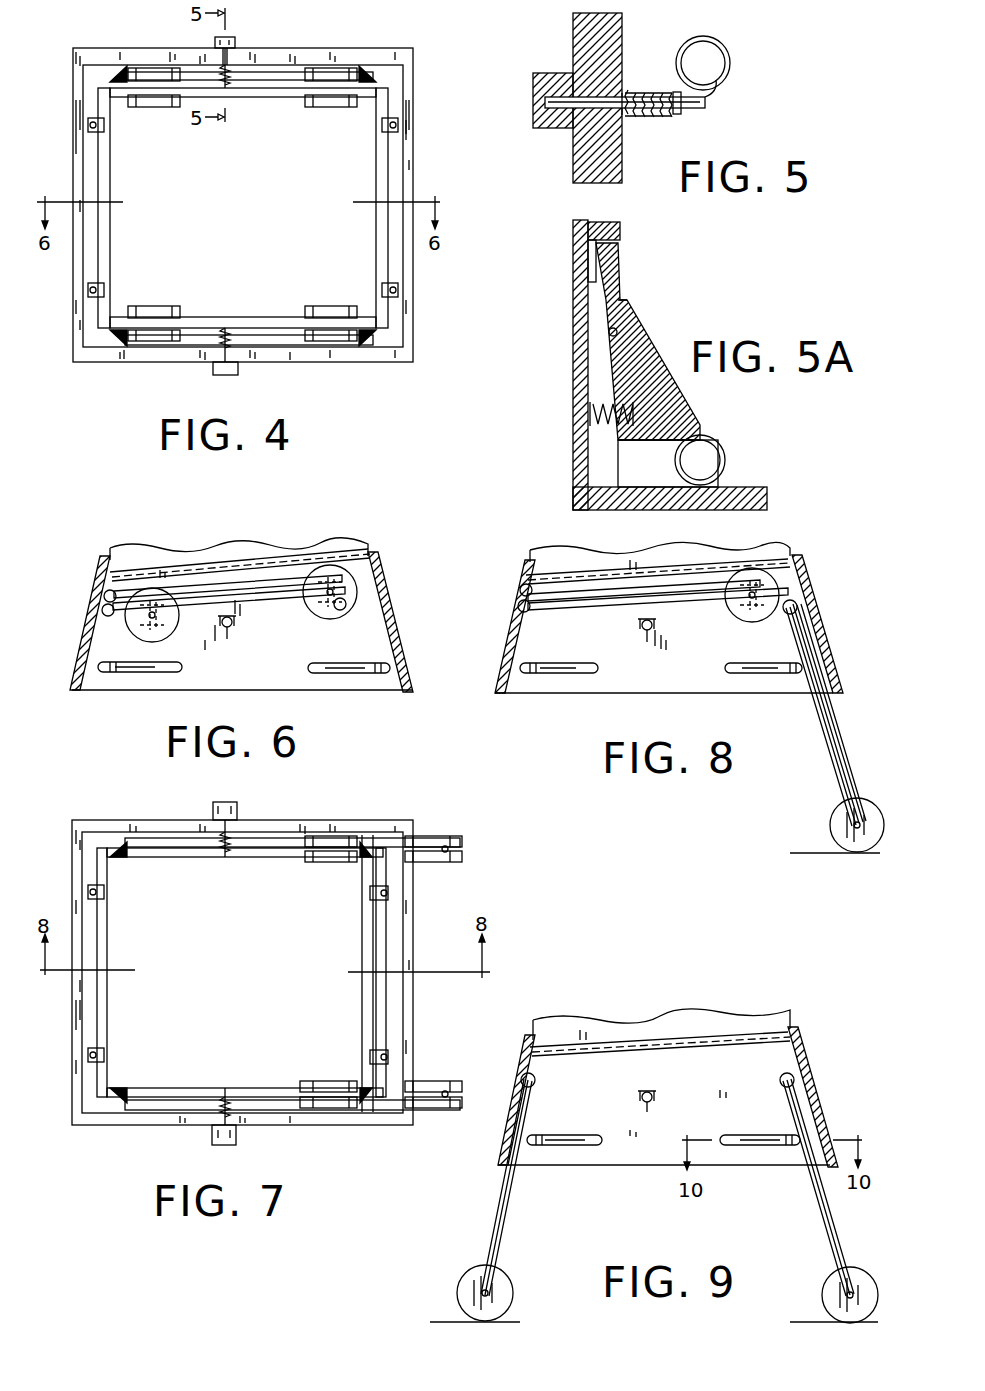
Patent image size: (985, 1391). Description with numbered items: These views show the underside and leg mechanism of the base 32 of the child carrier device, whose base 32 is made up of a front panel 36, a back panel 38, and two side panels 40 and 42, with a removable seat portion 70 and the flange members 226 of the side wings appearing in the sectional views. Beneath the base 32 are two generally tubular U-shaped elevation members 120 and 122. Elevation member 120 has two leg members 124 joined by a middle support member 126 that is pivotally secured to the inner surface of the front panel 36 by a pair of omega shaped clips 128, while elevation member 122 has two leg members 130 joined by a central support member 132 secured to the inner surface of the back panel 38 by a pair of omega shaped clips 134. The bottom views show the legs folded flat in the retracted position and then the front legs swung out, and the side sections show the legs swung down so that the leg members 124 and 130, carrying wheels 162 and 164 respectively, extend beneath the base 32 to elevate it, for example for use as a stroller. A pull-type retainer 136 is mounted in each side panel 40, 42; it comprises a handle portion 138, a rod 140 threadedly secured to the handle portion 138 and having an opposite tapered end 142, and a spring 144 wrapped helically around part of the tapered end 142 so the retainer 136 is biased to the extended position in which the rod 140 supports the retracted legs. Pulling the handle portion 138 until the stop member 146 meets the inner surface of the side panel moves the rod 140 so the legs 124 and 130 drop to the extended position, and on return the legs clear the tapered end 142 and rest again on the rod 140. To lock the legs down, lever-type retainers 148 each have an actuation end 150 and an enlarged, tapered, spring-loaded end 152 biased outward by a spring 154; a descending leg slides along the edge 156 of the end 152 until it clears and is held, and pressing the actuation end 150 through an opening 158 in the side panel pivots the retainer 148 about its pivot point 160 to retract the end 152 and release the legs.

In FIG. 4, the base 32 is at (421, 40).
In FIG. 6, the base 32 is at (226, 596).
In FIG. 8, the base 32 is at (651, 604).
In FIG. 7, the base 32 is at (68, 810).
In FIG. 9, the base 32 is at (645, 1083).
In FIG. 4, the front panel 36 is at (405, 160).
In FIG. 6, the front panel 36 is at (380, 578).
In FIG. 8, the front panel 36 is at (804, 584).
In FIG. 7, the front panel 36 is at (406, 973).
In FIG. 9, the front panel 36 is at (804, 1090).
In FIG. 4, the back panel 38 is at (78, 156).
In FIG. 6, the back panel 38 is at (84, 622).
In FIG. 8, the back panel 38 is at (508, 628).
In FIG. 7, the back panel 38 is at (76, 1012).
In FIG. 9, the back panel 38 is at (500, 1140).
In FIG. 4, the side panel 40 is at (282, 352).
In FIG. 7, the side panel 40 is at (294, 1126).
In FIG. 4, the side panel 42 is at (295, 58).
In FIG. 5, the side panel 42 is at (574, 22).
In FIG. 5A, the side panel 42 is at (574, 346).
In FIG. 6, the side panel 42 is at (296, 669).
In FIG. 8, the side panel 42 is at (586, 636).
In FIG. 7, the side panel 42 is at (300, 826).
In FIG. 9, the side panel 42 is at (616, 1107).
In FIG. 6, the seat portion 70 is at (290, 556).
In FIG. 8, the seat portion 70 is at (676, 570).
In FIG. 9, the seat portion 70 is at (628, 1040).
In FIG. 4, the elevation member 120 is at (400, 179).
In FIG. 7, the elevation member 120 is at (283, 972).
In FIG. 4, the elevation member 122 is at (94, 254).
In FIG. 7, the elevation member 122 is at (120, 936).
In FIG. 4, the leg member 124 is at (264, 84).
In FIG. 5, the leg member 124 is at (728, 52).
In FIG. 5A, the leg member 124 is at (726, 460).
In FIG. 6, the leg member 124 is at (266, 612).
In FIG. 8, the leg member 124 is at (822, 745).
In FIG. 7, the leg member 124 is at (395, 838).
In FIG. 9, the leg member 124 is at (824, 1220).
In FIG. 4, the middle support member 126 is at (390, 250).
In FIG. 7, the middle support member 126 is at (372, 990).
In FIG. 4, the omega shaped clip 128 is at (382, 130).
In FIG. 6, the omega shaped clip 128 is at (340, 610).
In FIG. 8, the omega shaped clip 128 is at (786, 614).
In FIG. 7, the omega shaped clip 128 is at (370, 894).
In FIG. 9, the omega shaped clip 128 is at (780, 1082).
In FIG. 6, the leg member 130 is at (250, 582).
In FIG. 8, the leg member 130 is at (698, 600).
In FIG. 7, the leg member 130 is at (203, 857).
In FIG. 9, the leg member 130 is at (500, 1206).
In FIG. 7, the central support member 132 is at (110, 992).
In FIG. 4, the omega shaped clip 134 is at (104, 124).
In FIG. 6, the omega shaped clip 134 is at (116, 618).
In FIG. 8, the omega shaped clip 134 is at (530, 614).
In FIG. 7, the omega shaped clip 134 is at (106, 893).
In FIG. 9, the omega shaped clip 134 is at (535, 1080).
In FIG. 4, the pull-type retainer 136 is at (218, 198).
In FIG. 5, the pull-type retainer 136 is at (634, 99).
In FIG. 6, the pull-type retainer 136 is at (227, 640).
In FIG. 8, the pull-type retainer 136 is at (648, 632).
In FIG. 7, the pull-type retainer 136 is at (211, 968).
In FIG. 9, the pull-type retainer 136 is at (648, 1090).
In FIG. 4, the handle portion 138 is at (236, 48).
In FIG. 5, the handle portion 138 is at (548, 74).
In FIG. 7, the handle portion 138 is at (220, 802).
In FIG. 4, the rod 140 is at (214, 62).
In FIG. 5, the rod 140 is at (565, 112).
In FIG. 7, the rod 140 is at (226, 1088).
In FIG. 5, the tapered end 142 is at (707, 104).
In FIG. 5, the spring 144 is at (660, 116).
In FIG. 5, the stop member 146 is at (682, 114).
In FIG. 5A, the lever-type retainer 148 is at (621, 345).
In FIG. 5A, the actuation end 150 is at (610, 246).
In FIG. 6, the actuation end 150 is at (170, 674).
In FIG. 8, the actuation end 150 is at (592, 674).
In FIG. 9, the actuation end 150 is at (596, 1146).
In FIG. 4, the spring-loaded end 152 is at (380, 76).
In FIG. 5A, the spring-loaded end 152 is at (665, 410).
In FIG. 6, the spring-loaded end 152 is at (114, 674).
In FIG. 8, the spring-loaded end 152 is at (532, 674).
In FIG. 7, the spring-loaded end 152 is at (104, 846).
In FIG. 9, the spring-loaded end 152 is at (538, 1146).
In FIG. 5A, the spring 154 is at (598, 424).
In FIG. 5A, the edge 156 is at (636, 408).
In FIG. 5A, the opening 158 is at (580, 258).
In FIG. 5A, the pivot point 160 is at (618, 333).
In FIG. 4, the wheel 162 is at (154, 70).
In FIG. 6, the wheel 162 is at (150, 590).
In FIG. 8, the wheel 162 is at (830, 826).
In FIG. 7, the wheel 162 is at (446, 836).
In FIG. 9, the wheel 162 is at (832, 1276).
In FIG. 4, the wheel 164 is at (338, 72).
In FIG. 6, the wheel 164 is at (332, 568).
In FIG. 8, the wheel 164 is at (754, 575).
In FIG. 7, the wheel 164 is at (316, 862).
In FIG. 9, the wheel 164 is at (474, 1268).
In FIG. 6, the flange member 226 is at (198, 570).
In FIG. 8, the flange member 226 is at (617, 575).
In FIG. 9, the flange member 226 is at (734, 1040).